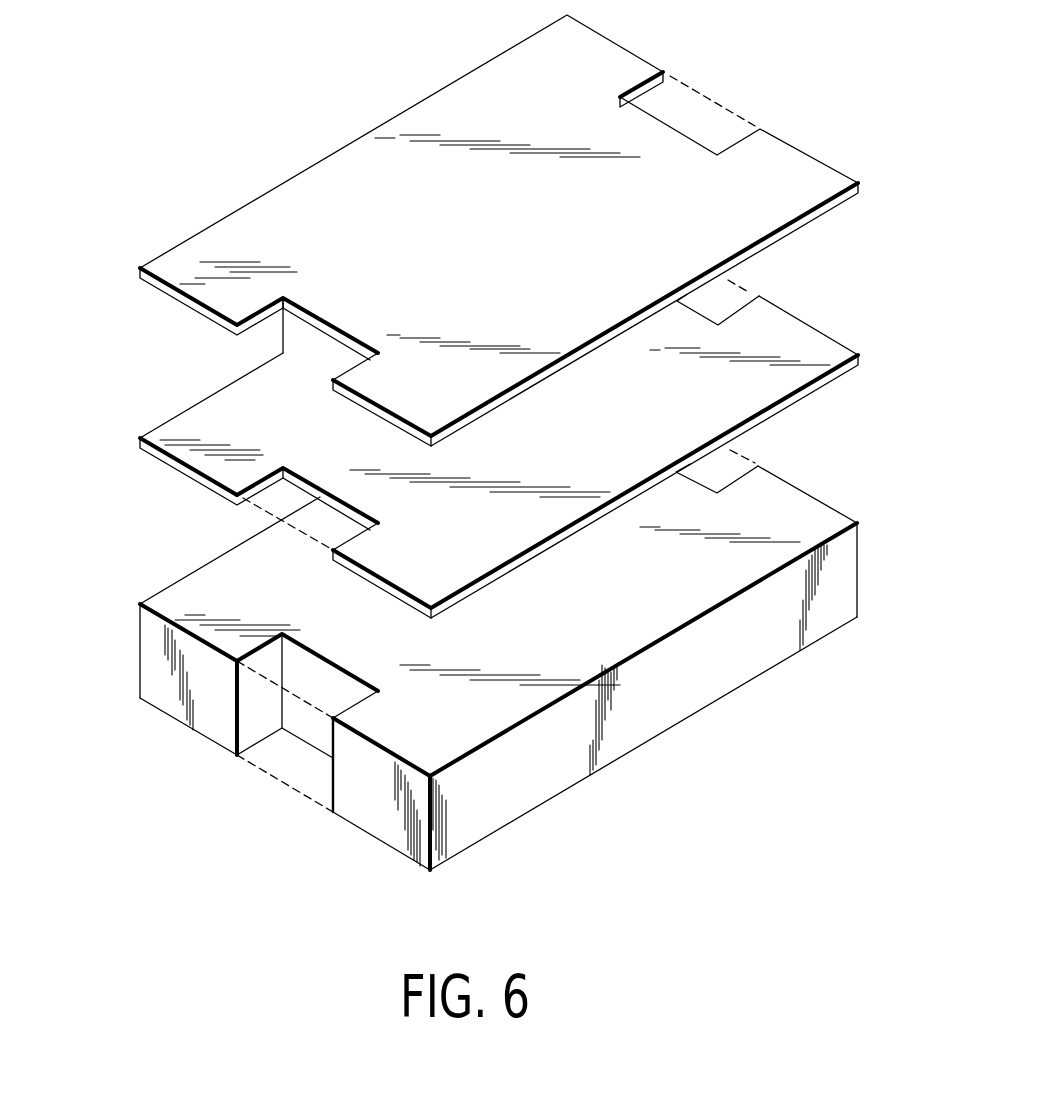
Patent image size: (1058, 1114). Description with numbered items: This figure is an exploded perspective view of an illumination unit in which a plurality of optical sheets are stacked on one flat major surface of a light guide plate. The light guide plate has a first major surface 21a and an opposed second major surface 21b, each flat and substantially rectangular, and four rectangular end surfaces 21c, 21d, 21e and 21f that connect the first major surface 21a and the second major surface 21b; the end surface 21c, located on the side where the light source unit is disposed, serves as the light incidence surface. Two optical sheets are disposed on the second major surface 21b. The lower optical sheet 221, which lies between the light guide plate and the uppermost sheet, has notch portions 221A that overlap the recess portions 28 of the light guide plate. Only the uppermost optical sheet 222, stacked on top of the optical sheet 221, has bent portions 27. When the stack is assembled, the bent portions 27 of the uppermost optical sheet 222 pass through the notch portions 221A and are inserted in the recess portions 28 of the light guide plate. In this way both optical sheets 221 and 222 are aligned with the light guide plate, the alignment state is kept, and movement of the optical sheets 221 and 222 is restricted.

The uppermost optical sheet 222 is at (227, 233).
The optical sheet 221 is at (185, 427).
The bent portion 27 is at (308, 352).
The notch portion 221A is at (722, 302).
The recess portion 28 is at (728, 461).
The first major surface 21a is at (585, 776).
The second major surface 21b is at (807, 508).
The end surface 21c is at (138, 664).
The end surface 21d is at (742, 673).
The end surface 21e is at (857, 578).
The end surface 21f is at (373, 827).